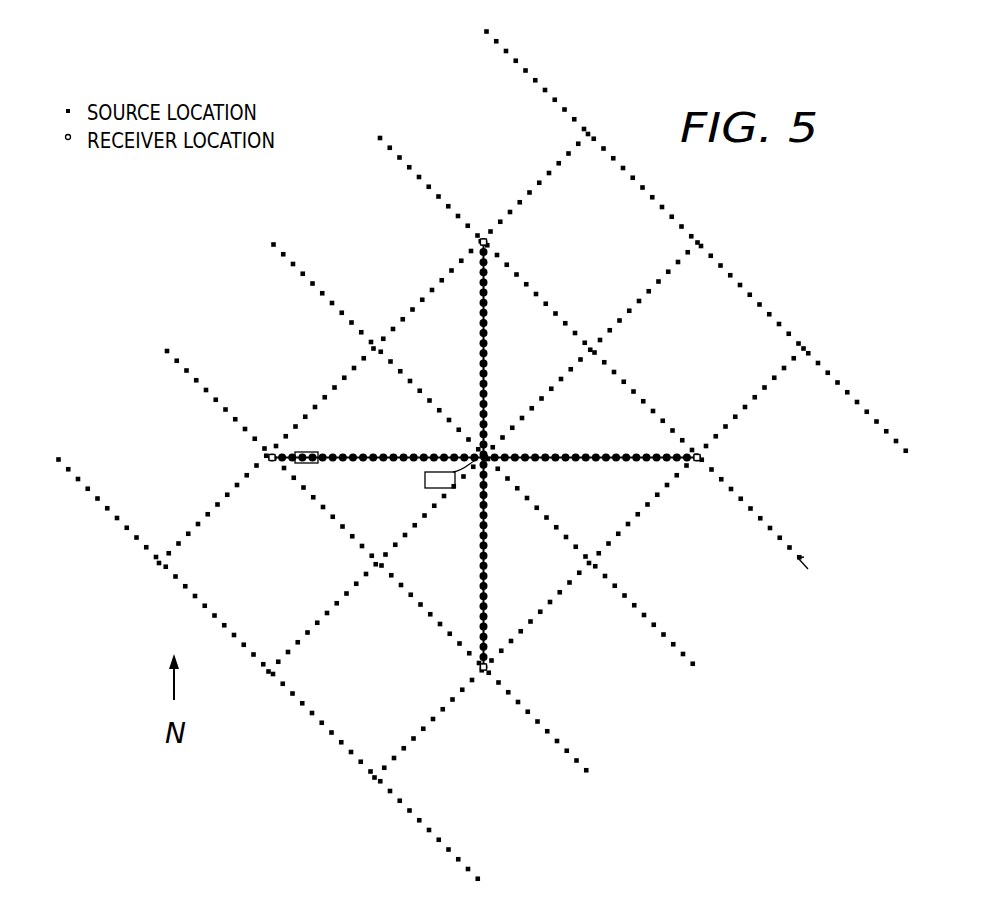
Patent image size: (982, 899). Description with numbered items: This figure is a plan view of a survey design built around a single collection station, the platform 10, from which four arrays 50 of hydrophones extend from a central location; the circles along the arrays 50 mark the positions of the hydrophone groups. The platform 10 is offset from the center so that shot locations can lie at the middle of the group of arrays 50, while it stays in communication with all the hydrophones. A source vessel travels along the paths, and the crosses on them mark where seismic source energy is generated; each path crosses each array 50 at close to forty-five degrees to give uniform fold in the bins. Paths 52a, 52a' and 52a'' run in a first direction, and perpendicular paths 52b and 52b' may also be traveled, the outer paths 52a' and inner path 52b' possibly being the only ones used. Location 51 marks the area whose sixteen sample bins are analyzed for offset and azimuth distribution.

The platform 10 is at (424, 480).
The arrays 50 is at (480, 343).
The location 51 is at (305, 464).
The path 52a is at (481, 430).
The outer path 52a' is at (477, 428).
The path 52a'' is at (476, 442).
The perpendicular path 52b is at (487, 456).
The inner path 52b' is at (490, 457).